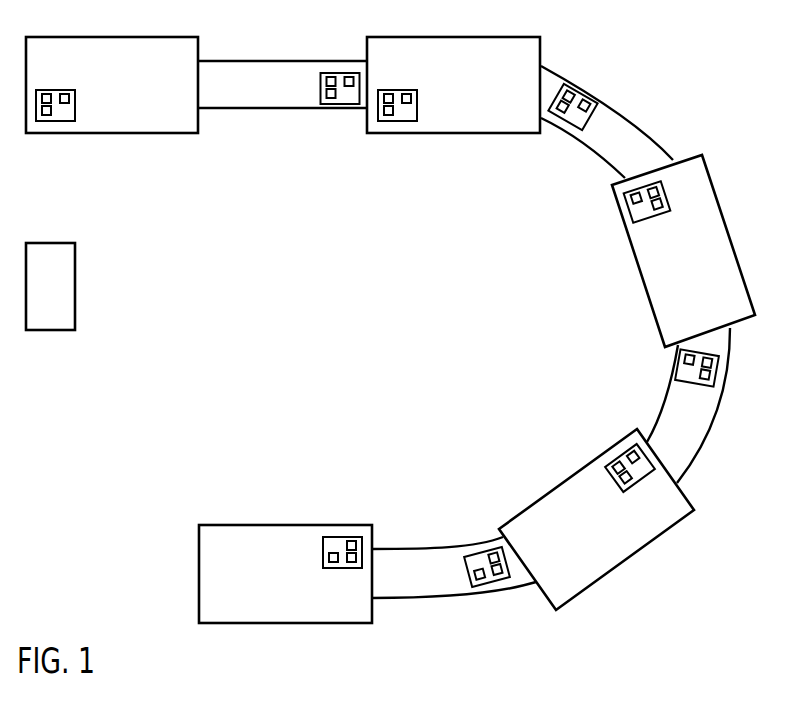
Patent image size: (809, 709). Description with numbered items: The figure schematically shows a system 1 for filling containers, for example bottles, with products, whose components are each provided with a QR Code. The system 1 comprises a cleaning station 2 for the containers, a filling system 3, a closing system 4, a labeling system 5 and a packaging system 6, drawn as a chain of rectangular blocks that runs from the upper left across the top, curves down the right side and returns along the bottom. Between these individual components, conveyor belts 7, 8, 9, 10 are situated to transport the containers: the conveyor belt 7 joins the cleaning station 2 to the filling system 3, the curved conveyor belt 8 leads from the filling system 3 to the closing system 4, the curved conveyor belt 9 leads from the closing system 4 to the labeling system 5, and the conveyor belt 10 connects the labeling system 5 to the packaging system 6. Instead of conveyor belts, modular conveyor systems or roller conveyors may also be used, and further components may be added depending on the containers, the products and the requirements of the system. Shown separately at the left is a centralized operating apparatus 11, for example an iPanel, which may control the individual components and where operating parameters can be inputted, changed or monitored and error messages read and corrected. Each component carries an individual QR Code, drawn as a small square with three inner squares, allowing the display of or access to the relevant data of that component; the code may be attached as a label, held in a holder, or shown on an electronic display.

The system 1 is at (713, 33).
The cleaning station 2 is at (168, 124).
The filling system 3 is at (512, 124).
The closing system 4 is at (660, 312).
The labeling system 5 is at (530, 515).
The packaging system 6 is at (237, 532).
The conveyor belt 7 is at (277, 62).
The conveyor belt 8 is at (629, 118).
The conveyor belt 9 is at (707, 425).
The conveyor belt 10 is at (443, 596).
The centralized operating apparatus 11 is at (68, 286).